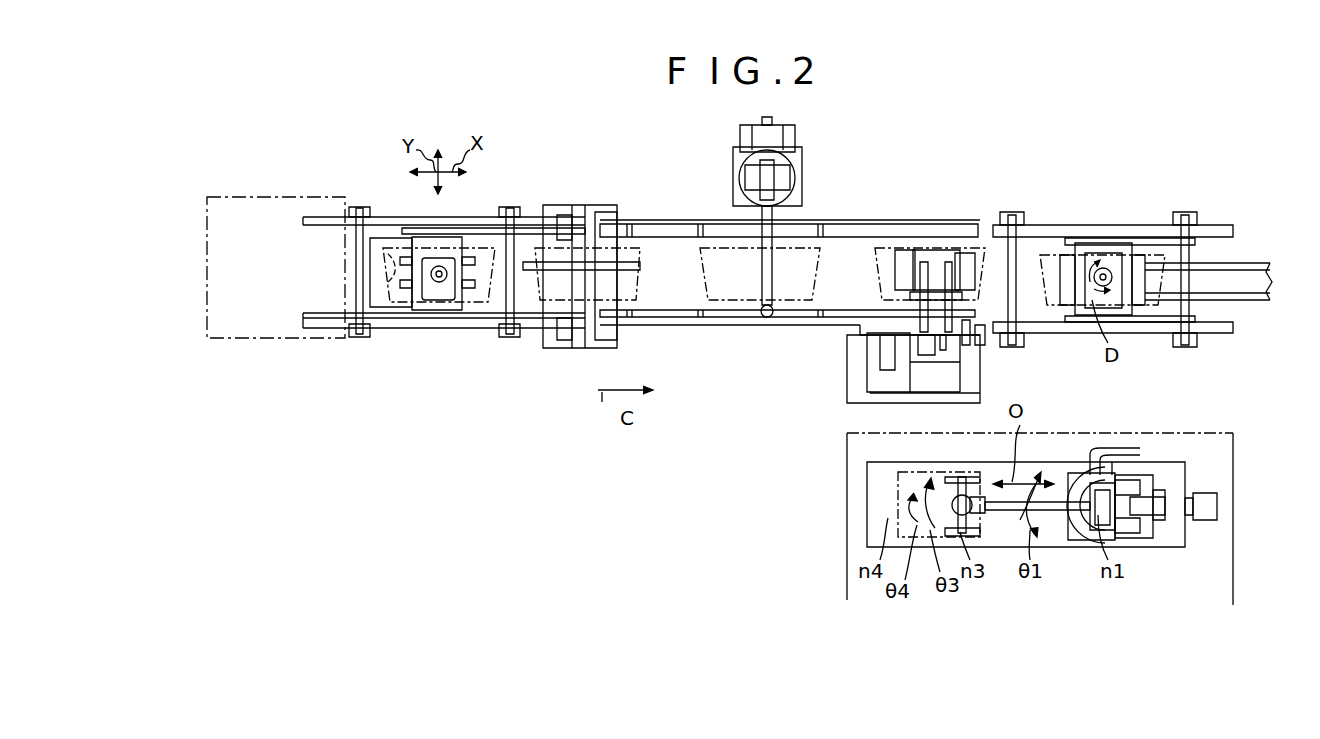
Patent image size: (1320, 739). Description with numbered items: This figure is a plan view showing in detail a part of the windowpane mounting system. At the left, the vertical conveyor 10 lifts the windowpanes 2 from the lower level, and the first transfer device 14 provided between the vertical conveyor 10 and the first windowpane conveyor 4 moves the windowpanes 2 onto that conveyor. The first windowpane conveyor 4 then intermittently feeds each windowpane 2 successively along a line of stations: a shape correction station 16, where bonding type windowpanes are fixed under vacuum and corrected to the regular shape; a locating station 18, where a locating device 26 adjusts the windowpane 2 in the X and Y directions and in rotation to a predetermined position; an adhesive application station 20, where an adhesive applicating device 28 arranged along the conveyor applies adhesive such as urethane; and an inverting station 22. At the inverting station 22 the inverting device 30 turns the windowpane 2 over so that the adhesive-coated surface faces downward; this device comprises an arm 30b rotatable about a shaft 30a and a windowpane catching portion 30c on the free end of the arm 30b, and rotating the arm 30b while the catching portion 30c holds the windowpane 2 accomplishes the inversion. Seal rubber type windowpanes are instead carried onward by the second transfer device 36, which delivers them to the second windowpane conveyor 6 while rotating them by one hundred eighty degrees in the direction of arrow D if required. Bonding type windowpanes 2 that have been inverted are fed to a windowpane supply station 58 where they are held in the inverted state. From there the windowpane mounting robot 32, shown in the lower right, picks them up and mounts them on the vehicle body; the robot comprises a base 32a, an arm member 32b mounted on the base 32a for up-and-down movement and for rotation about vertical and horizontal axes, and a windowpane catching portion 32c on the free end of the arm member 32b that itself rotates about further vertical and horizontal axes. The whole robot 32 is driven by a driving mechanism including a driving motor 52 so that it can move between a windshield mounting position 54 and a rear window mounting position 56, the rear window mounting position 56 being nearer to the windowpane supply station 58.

The windowpane 2 is at (390, 328).
The first windowpane conveyor 4 is at (683, 327).
The second windowpane conveyor 6 is at (1254, 254).
The vertical conveyor 10 is at (250, 197).
The first transfer device 14 is at (394, 217).
The shape correction station 16 is at (442, 332).
The locating station 18 is at (576, 352).
The adhesive application station 20 is at (769, 326).
The inverting station 22 is at (918, 210).
The locating device 26 is at (603, 243).
The adhesive applicating device 28 is at (803, 176).
The inverting device 30 is at (858, 372).
The shaft 30a is at (880, 396).
The arm 30b is at (910, 296).
The windowpane catching portion 30c is at (940, 246).
The windowpane mounting robot 32 is at (1160, 470).
The base 32a is at (1112, 545).
The arm member 32b is at (1050, 545).
The windowpane catching portion 32c is at (983, 545).
The second transfer device 36 is at (1118, 226).
The driving motor 52 is at (1215, 495).
The windshield mounting position 54 is at (1075, 468).
The rear window mounting position 56 is at (940, 468).
The windowpane supply station 58 is at (985, 378).